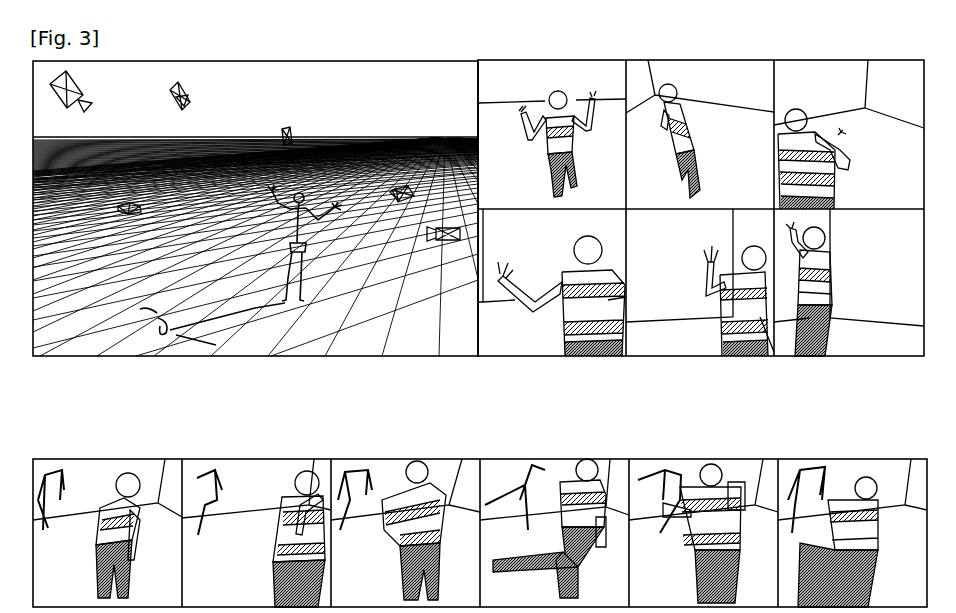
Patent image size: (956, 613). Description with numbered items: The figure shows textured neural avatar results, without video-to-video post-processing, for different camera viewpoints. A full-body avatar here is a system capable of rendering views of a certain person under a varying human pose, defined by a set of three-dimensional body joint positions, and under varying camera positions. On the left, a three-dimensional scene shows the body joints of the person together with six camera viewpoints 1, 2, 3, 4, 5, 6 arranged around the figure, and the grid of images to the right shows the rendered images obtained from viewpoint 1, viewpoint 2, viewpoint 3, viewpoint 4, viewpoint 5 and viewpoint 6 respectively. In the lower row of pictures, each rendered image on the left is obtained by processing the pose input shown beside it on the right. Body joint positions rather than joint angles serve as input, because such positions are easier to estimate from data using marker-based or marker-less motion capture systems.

The viewpoint 1 is at (338, 129).
The viewpoint 2 is at (472, 129).
The viewpoint 3 is at (603, 134).
The viewpoint 4 is at (508, 259).
The viewpoint 5 is at (600, 280).
The viewpoint 6 is at (517, 268).